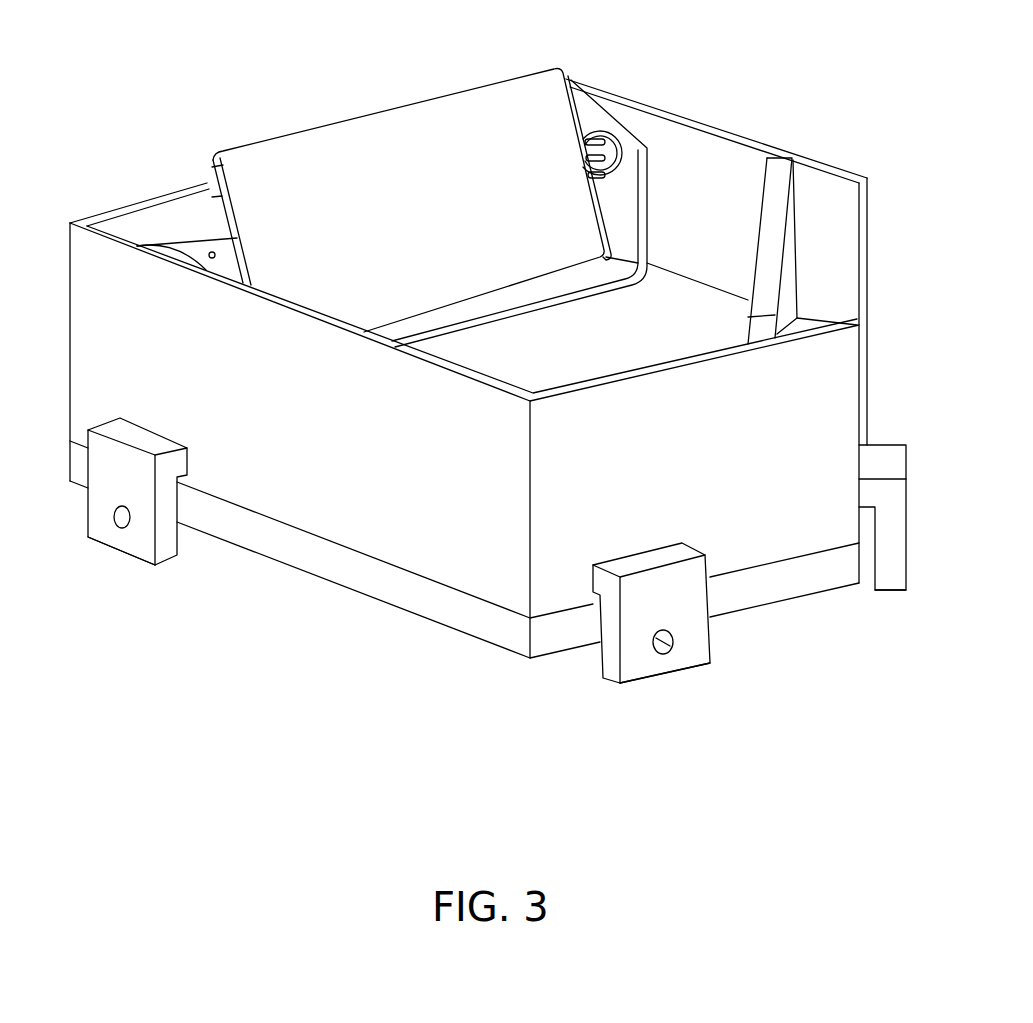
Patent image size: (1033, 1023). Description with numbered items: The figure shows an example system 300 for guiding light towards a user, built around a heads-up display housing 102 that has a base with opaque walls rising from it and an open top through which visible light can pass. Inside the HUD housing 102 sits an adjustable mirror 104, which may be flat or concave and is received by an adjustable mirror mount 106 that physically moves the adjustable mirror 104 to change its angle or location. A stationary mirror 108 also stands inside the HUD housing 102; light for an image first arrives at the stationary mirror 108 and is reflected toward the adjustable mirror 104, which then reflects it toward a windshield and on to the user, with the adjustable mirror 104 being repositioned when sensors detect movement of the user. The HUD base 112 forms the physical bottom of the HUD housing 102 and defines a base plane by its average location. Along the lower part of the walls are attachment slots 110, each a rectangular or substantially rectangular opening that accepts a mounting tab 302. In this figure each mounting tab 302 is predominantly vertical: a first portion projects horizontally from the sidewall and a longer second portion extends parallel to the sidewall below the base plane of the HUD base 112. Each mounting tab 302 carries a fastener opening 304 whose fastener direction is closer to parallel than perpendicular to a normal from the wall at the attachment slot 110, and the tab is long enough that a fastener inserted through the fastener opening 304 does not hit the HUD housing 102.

The system for guiding light towards a user 300 is at (489, 460).
The HUD housing 102 is at (375, 560).
The adjustable mirror 104 is at (318, 128).
The adjustable mirror mount 106 is at (627, 163).
The stationary mirror 108 is at (773, 213).
The attachment slot 110 is at (135, 423).
The HUD base 112 is at (455, 630).
The mounting tab 302 is at (167, 562).
The fastener opening 304 is at (120, 532).